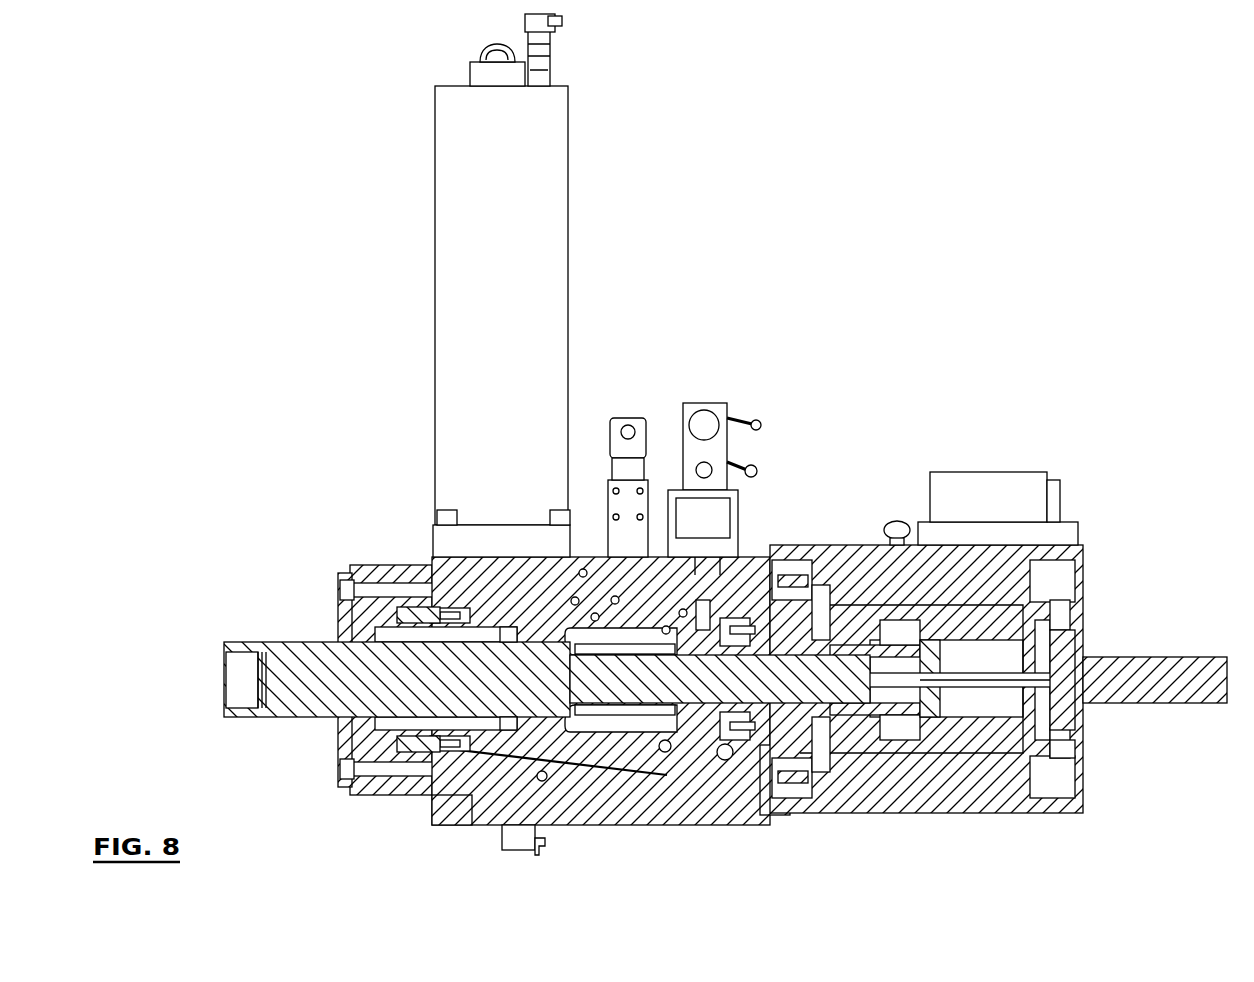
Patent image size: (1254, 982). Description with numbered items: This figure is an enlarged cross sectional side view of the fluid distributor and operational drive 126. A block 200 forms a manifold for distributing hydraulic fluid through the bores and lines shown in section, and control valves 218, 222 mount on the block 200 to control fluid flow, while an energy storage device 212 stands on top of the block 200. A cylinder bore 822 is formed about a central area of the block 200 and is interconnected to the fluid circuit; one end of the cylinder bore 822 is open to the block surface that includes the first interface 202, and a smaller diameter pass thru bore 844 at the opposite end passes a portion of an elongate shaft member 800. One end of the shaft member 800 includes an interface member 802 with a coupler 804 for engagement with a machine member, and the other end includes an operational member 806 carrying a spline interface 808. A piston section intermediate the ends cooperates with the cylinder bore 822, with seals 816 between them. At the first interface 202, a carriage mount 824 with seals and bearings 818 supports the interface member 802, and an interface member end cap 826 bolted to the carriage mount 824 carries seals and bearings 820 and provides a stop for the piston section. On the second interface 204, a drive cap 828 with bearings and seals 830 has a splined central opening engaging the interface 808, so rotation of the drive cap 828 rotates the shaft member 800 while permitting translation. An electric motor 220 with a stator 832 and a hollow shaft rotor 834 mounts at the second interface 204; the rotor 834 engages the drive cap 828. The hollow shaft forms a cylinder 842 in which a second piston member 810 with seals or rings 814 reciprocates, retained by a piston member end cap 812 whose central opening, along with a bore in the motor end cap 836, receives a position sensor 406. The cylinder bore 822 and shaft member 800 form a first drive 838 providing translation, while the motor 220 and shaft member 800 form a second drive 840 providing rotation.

The fluid distributor and operational drive 126 is at (1078, 858).
The block 200 is at (672, 826).
The first interface 202 is at (432, 800).
The second interface 204 is at (772, 813).
The energy storage device 212 is at (568, 145).
The control valve 218 is at (718, 403).
The electric motor 220 is at (1025, 813).
The control valve 222 is at (636, 418).
The position sensor 406 is at (1190, 657).
The shaft member 800 is at (513, 742).
The interface member 802 is at (298, 641).
The coupler 804 is at (240, 672).
The operational member 806 is at (597, 706).
The interface 808 is at (746, 736).
The second piston member 810 is at (926, 700).
The piston member end cap 812 is at (932, 640).
The seals or rings 814 is at (858, 640).
The seals 816 is at (594, 641).
The seals/bearings 818 is at (340, 740).
The seals/bearings 820 is at (402, 606).
The cylinder bore 822 is at (528, 630).
The carriage mount 824 is at (350, 796).
The interface member end cap 826 is at (368, 772).
The drive cap 828 is at (830, 706).
The bearings and seals 830 is at (812, 570).
The stator 832 is at (1012, 575).
The hollow shaft rotor 834 is at (1063, 640).
The motor end cap 836 is at (1085, 745).
The first drive 838 is at (622, 290).
The second drive 840 is at (930, 348).
The cylinder 842 is at (978, 700).
The pass thru bore 844 is at (712, 632).